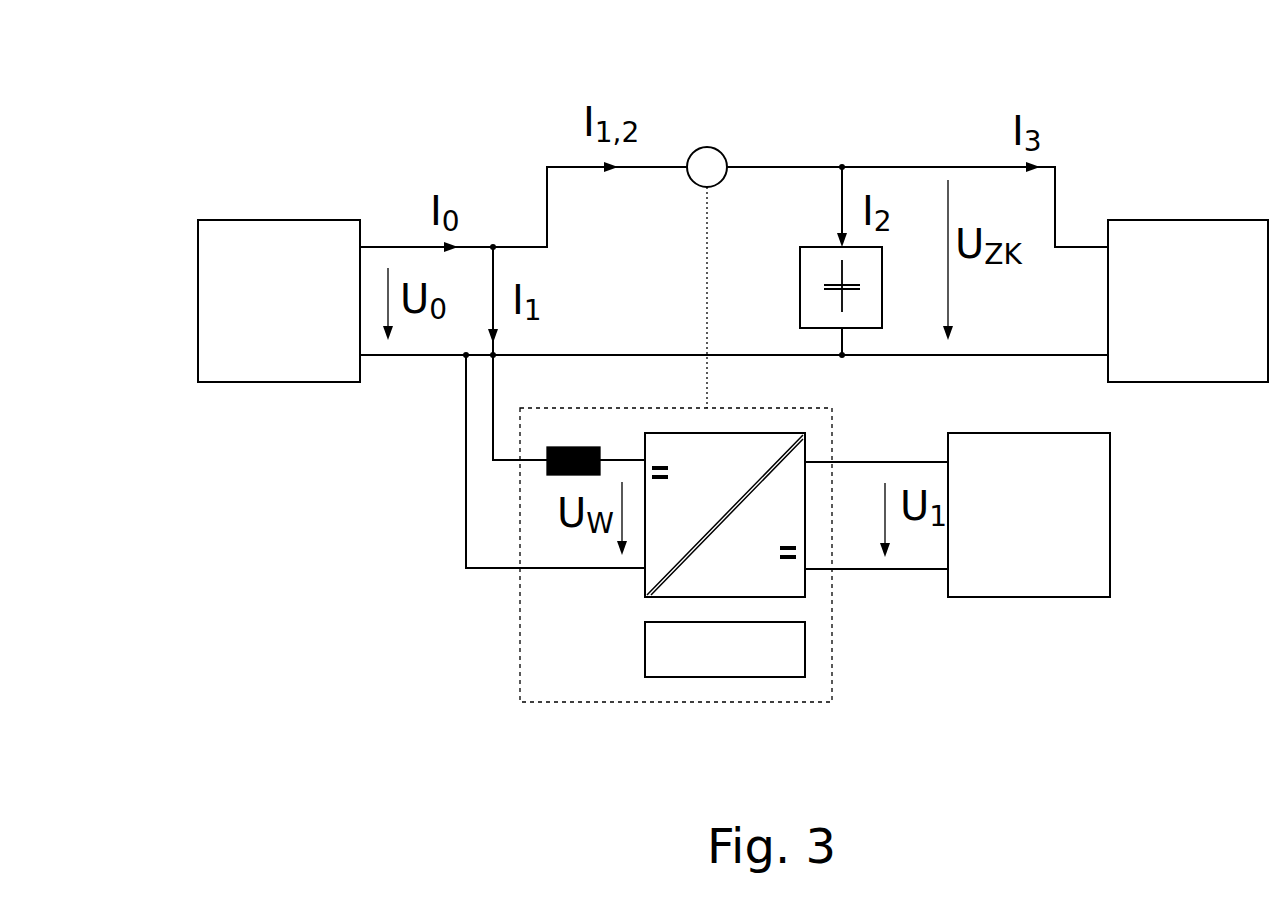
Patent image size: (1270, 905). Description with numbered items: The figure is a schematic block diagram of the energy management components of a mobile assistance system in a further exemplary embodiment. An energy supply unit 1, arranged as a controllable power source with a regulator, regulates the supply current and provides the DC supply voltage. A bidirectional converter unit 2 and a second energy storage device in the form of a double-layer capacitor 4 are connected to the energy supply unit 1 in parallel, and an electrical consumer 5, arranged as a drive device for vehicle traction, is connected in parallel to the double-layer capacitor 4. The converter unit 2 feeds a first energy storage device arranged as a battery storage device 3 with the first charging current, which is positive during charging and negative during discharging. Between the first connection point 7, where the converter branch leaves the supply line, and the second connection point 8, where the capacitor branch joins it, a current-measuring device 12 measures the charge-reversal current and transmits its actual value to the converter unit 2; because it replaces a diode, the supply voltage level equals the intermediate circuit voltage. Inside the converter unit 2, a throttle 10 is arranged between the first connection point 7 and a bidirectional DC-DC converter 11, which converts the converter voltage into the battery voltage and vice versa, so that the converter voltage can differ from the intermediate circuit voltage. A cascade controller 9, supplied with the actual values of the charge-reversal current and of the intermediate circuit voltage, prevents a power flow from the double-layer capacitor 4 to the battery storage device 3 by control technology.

The energy supply unit 1 is at (292, 322).
The bidirectional converter unit 2 is at (549, 711).
The first energy storage device 3 is at (1040, 536).
The second energy storage device 4 is at (867, 265).
The electrical consumer 5 is at (1202, 322).
The first connection point 7 is at (494, 232).
The second connection point 8 is at (846, 148).
The cascade controller 9 is at (737, 671).
The throttle 10 is at (545, 486).
The bidirectional DC-DC converter 11 is at (757, 462).
The current-measuring device 12 is at (719, 135).